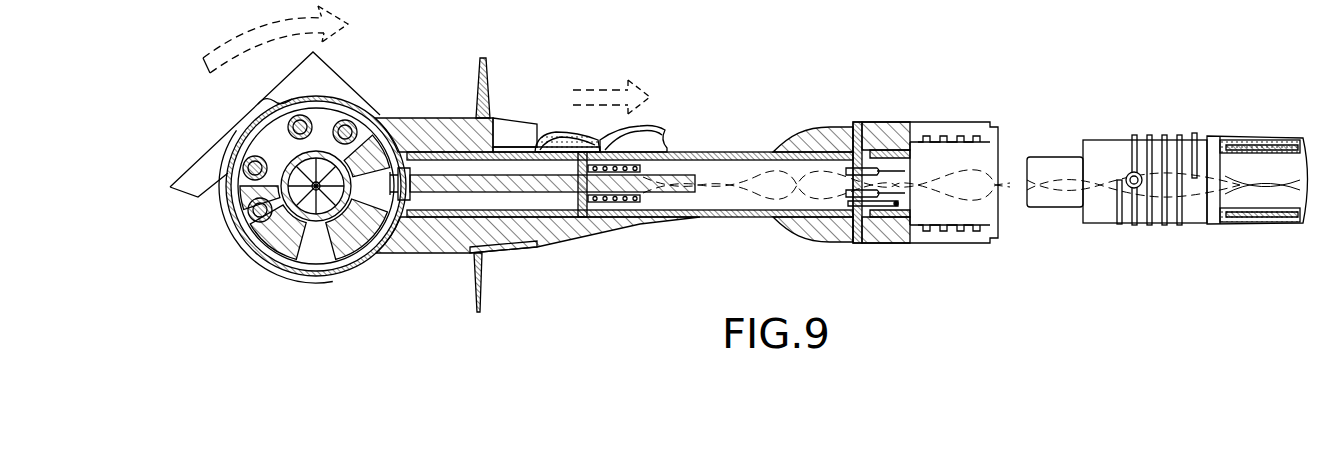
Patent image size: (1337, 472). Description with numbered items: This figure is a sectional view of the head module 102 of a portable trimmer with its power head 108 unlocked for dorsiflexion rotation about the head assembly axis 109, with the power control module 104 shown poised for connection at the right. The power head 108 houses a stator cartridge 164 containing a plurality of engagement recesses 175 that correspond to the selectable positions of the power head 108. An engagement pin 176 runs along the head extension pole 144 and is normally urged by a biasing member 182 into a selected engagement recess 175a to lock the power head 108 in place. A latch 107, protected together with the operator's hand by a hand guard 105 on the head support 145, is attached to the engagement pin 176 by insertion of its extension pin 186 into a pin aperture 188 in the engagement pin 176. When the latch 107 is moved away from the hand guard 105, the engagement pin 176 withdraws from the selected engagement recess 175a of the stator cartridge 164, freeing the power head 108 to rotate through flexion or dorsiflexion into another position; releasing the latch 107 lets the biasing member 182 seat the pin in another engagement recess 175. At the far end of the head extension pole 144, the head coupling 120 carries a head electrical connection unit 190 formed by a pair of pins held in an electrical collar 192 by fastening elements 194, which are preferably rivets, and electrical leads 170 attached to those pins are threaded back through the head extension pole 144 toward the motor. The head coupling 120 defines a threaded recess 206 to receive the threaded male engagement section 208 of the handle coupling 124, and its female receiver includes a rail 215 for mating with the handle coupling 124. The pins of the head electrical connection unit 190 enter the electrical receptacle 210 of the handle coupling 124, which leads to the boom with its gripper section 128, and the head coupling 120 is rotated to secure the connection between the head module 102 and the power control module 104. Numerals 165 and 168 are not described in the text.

The head module 102 is at (762, 94).
The power control module 104 is at (1222, 113).
The hand guard 105 is at (484, 60).
The latch 107 is at (658, 130).
The power head 108 is at (253, 266).
The head assembly axis 109 is at (265, 128).
The head coupling 120 is at (905, 120).
The handle coupling 124 is at (1100, 140).
The gripper section 128 is at (1226, 225).
The head extension pole 144 is at (679, 218).
The head support 145 is at (448, 258).
The stator cartridge 164 is at (352, 252).
The clip 165 is at (280, 96).
The fasteners 168 is at (300, 113).
The electrical leads 170 is at (766, 186).
The engagement recesses 175 is at (392, 112).
The selected engagement recess 175a is at (382, 250).
The engagement pin 176 is at (686, 175).
The biasing member 182 is at (604, 203).
The extension pin 186 is at (560, 162).
The pin aperture 188 is at (583, 200).
The head electrical connection unit 190 is at (880, 192).
The electrical collar 192 is at (890, 128).
The fastening elements 194 is at (862, 122).
The threaded recess 206 is at (963, 158).
The threaded male engagement section 208 is at (1120, 226).
The electrical receptacle 210 is at (1030, 175).
The rail 215 is at (912, 208).